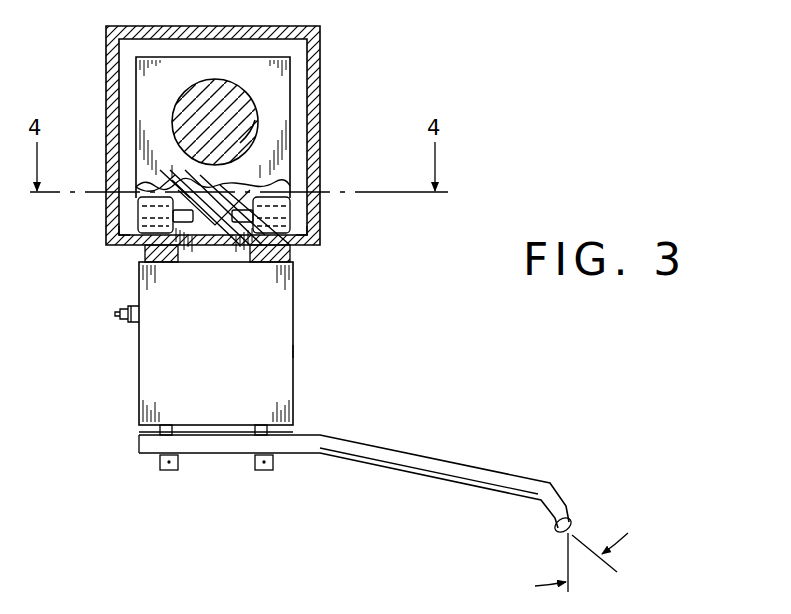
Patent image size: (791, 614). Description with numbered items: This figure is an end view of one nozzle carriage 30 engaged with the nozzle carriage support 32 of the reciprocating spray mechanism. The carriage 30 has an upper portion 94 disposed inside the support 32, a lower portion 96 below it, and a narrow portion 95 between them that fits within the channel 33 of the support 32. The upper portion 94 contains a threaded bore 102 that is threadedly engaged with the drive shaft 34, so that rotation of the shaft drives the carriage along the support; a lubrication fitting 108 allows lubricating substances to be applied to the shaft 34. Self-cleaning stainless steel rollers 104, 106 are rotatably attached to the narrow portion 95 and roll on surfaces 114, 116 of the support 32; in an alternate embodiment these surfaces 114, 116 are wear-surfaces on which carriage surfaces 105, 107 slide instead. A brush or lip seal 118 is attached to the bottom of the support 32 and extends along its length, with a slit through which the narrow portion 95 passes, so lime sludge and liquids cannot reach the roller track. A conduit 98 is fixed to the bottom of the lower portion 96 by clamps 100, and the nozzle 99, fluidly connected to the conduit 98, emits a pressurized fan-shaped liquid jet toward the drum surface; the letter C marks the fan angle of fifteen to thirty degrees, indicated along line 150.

The nozzle carriage 30 is at (296, 352).
The nozzle carriage support 32 is at (313, 78).
The channel 33 is at (258, 262).
The drive shaft 34 is at (250, 144).
The upper portion 94 is at (268, 70).
The narrow portion 95 is at (212, 246).
The lower portion 96 is at (275, 380).
The conduit 98 is at (380, 460).
The nozzle 99 is at (553, 526).
The clamps 100 is at (252, 470).
The threaded bore 102 is at (250, 108).
The self-cleaning stainless steel roller 104 is at (292, 211).
The sliding surface 105 is at (296, 180).
The self-cleaning stainless steel roller 106 is at (140, 211).
The sliding surface 107 is at (138, 186).
The lubrication fitting 108 is at (125, 318).
The surface 114 is at (300, 230).
The surface 116 is at (110, 229).
The brush or lip seal 118 is at (140, 258).
The angle reference line 150 is at (590, 546).